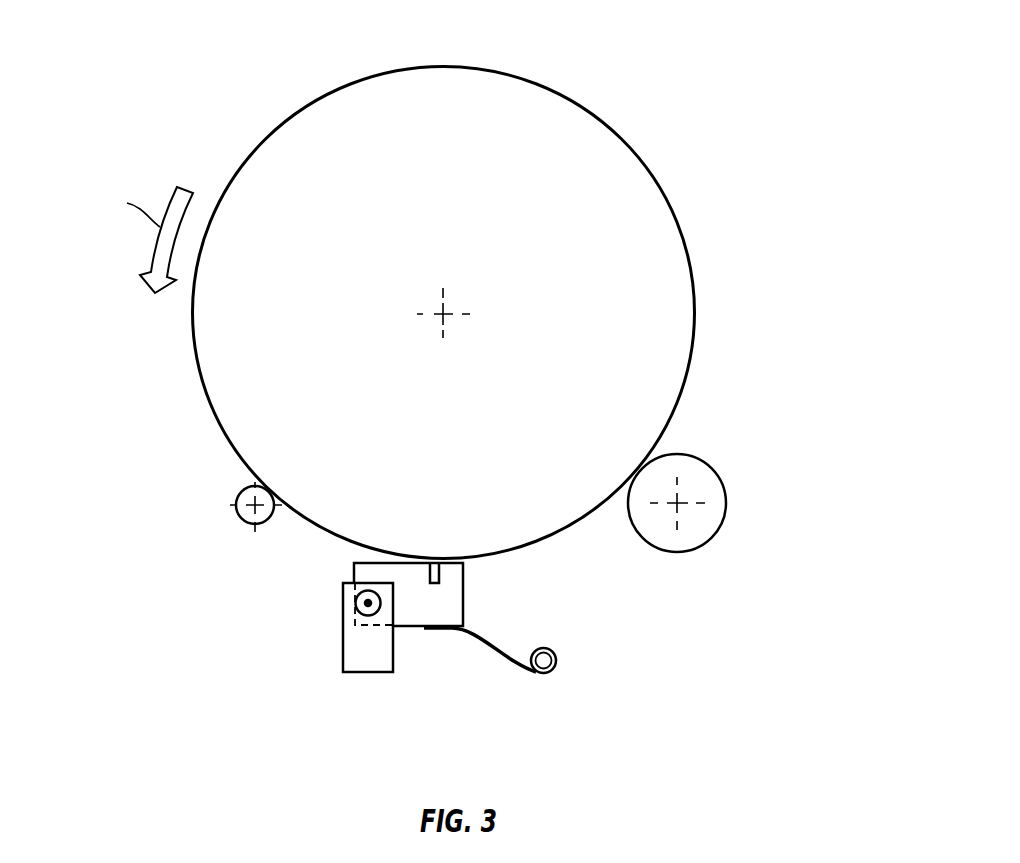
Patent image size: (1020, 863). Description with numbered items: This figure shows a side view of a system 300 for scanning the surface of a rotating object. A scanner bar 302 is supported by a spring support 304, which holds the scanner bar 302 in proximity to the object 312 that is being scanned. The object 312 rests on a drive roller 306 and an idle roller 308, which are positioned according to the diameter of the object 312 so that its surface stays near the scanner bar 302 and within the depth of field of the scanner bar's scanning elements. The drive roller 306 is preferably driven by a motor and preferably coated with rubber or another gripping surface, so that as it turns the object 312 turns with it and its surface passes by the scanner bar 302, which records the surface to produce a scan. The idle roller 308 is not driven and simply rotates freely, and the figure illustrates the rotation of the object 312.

The system 300 is at (782, 102).
The scanner bar 302 is at (463, 577).
The spring support 304 is at (556, 665).
The drive roller 306 is at (237, 519).
The idle roller 308 is at (723, 523).
The object 312 is at (443, 67).